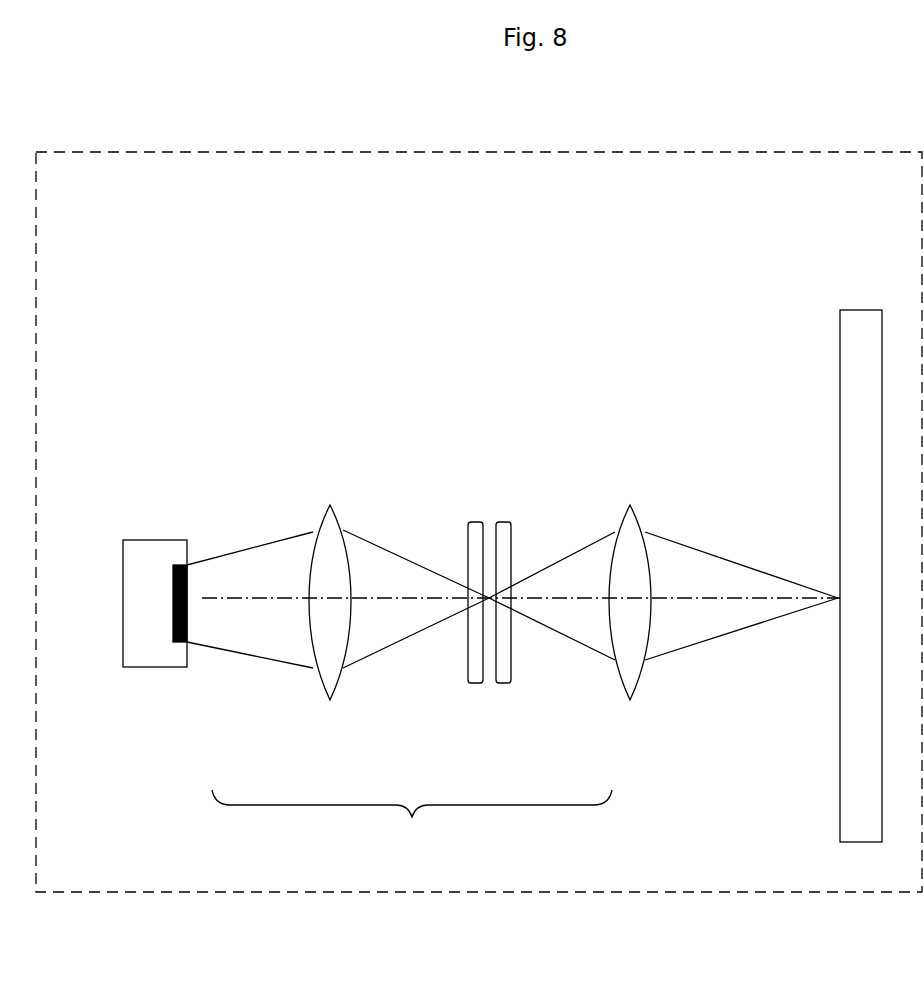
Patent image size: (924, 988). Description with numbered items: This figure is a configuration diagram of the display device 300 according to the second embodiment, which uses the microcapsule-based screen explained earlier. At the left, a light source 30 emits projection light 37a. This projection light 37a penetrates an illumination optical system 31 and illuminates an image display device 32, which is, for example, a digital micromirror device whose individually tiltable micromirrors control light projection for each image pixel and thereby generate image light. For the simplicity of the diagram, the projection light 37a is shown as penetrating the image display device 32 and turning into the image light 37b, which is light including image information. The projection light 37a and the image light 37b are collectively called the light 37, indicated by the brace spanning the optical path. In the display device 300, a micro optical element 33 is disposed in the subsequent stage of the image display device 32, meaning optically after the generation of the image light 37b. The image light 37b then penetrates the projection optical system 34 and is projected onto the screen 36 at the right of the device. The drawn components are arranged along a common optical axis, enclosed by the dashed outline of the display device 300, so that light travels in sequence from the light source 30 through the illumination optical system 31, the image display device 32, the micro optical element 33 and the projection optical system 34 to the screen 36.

The display device 300 is at (671, 151).
The light source 30 is at (135, 538).
The illumination optical system 31 is at (330, 505).
The image display device 32 is at (475, 520).
The micro optical element 33 is at (503, 520).
The projection optical system 34 is at (631, 505).
The screen 36 is at (852, 308).
The light 37 is at (412, 829).
The projection light 37a is at (238, 652).
The image light 37b is at (537, 630).